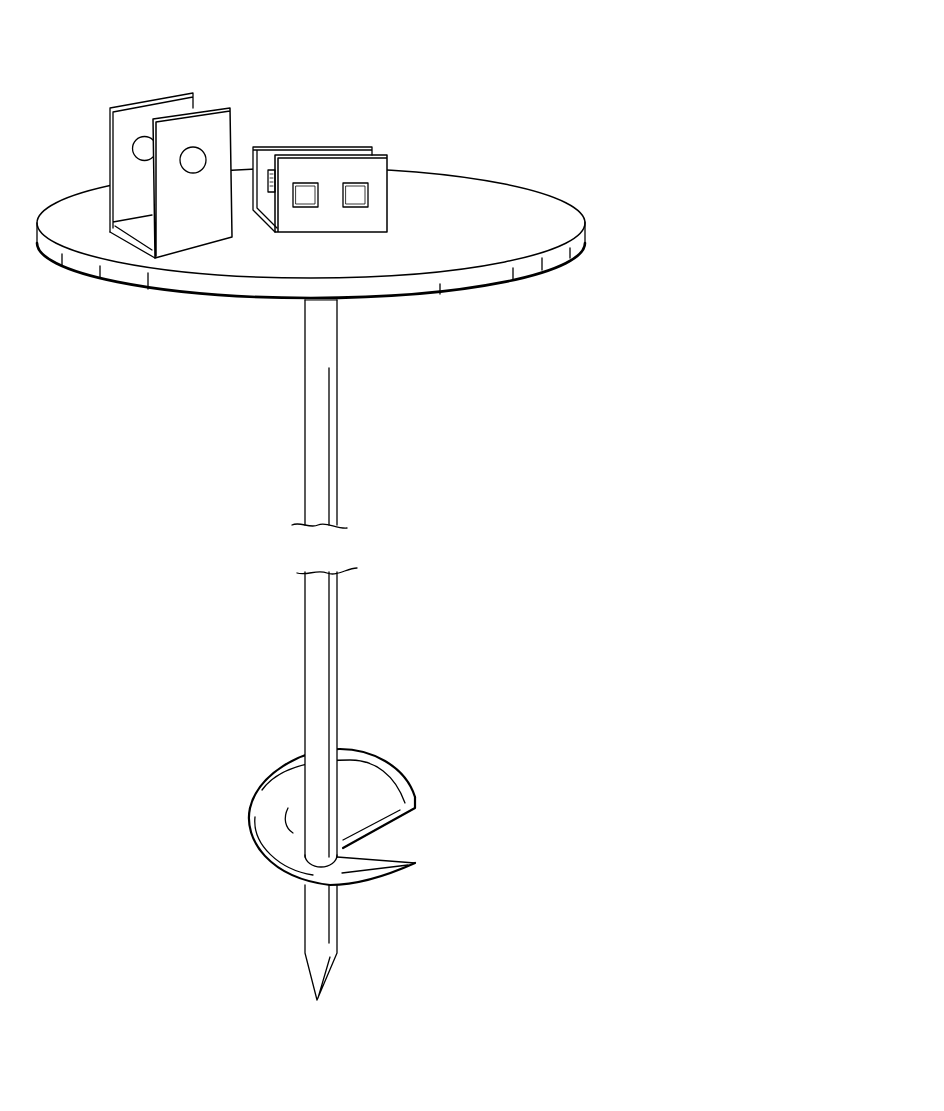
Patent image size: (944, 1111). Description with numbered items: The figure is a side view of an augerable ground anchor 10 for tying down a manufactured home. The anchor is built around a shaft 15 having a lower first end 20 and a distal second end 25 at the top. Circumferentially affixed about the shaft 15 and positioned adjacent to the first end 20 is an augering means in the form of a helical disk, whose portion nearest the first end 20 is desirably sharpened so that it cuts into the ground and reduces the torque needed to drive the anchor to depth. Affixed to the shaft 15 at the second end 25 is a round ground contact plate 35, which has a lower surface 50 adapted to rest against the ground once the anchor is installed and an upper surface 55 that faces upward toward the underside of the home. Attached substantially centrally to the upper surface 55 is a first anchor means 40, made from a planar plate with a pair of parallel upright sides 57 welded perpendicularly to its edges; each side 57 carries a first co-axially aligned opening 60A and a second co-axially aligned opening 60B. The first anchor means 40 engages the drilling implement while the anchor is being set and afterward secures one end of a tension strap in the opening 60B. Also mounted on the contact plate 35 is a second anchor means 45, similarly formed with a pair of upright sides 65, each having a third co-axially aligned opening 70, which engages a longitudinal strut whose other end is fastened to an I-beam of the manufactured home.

The augerable ground anchor 10 is at (514, 98).
The shaft 15 is at (325, 453).
The first end 20 is at (345, 973).
The distal second end 25 is at (347, 311).
The ground contact plate 35 is at (535, 223).
The first anchor means 40 is at (352, 140).
The second anchor means 45 is at (216, 233).
The lower surface 50 is at (502, 298).
The upper surface 55 is at (460, 193).
The upright sides 57 is at (323, 170).
The first co-axially aligned opening 60A is at (305, 197).
The second co-axially aligned opening 60B is at (357, 197).
The upright sides 65 is at (130, 193).
The third co-axially aligned opening 70 is at (190, 162).